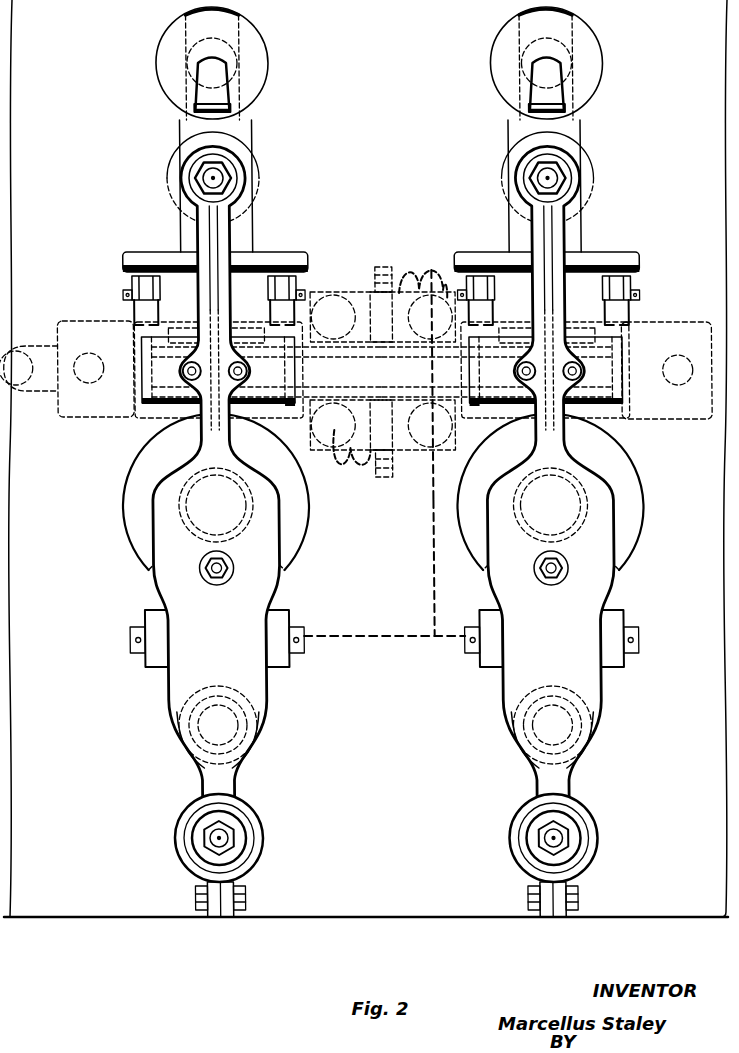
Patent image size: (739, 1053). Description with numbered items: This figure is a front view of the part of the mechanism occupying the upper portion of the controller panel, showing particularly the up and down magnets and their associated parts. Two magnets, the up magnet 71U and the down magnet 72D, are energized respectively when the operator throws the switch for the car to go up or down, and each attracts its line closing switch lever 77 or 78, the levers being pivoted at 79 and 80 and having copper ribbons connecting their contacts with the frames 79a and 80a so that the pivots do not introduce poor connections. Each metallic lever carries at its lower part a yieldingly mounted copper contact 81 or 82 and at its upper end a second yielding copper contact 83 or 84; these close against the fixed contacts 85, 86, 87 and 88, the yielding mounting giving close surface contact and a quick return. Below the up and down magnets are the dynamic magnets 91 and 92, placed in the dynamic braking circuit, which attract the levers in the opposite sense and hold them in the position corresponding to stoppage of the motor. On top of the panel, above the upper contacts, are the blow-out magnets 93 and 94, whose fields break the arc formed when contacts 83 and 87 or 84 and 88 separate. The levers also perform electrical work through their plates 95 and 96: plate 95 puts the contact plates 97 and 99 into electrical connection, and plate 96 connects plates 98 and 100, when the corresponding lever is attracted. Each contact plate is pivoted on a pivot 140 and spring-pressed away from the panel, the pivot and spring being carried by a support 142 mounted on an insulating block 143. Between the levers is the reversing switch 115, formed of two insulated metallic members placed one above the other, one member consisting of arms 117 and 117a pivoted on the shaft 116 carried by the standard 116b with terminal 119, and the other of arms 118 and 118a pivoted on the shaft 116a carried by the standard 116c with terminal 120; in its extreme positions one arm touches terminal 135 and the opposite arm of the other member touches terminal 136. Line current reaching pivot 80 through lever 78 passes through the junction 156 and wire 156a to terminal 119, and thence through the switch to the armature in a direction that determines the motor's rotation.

The up magnet 71U is at (145, 508).
The down magnet 72D is at (628, 506).
The line closing switch lever 77 is at (217, 235).
The line closing switch lever 78 is at (545, 240).
The pivot 79 is at (134, 641).
The frame 79a is at (155, 622).
The pivot 80 is at (627, 648).
The frame 80a is at (608, 622).
The contacting plate or button of copper 81 is at (172, 835).
The contacting plate or button of copper 82 is at (595, 835).
The yieldingly mounted copper contact 83 is at (170, 190).
The yieldingly mounted copper contact 84 is at (590, 191).
The fixed contact 85 is at (175, 858).
The fixed contact 86 is at (595, 858).
The fixed contact 87 is at (168, 158).
The fixed contact 88 is at (590, 160).
The dynamic magnet 91 is at (170, 742).
The dynamic magnet 92 is at (593, 750).
The blow-out magnet 93 is at (168, 66).
The blow-out magnet 94 is at (598, 71).
The plate 95 is at (150, 428).
The plate 96 is at (598, 420).
The contact plate 97 is at (140, 403).
The contact plate 98 is at (472, 405).
The contact plate 99 is at (289, 405).
The contact plate 100 is at (620, 407).
The reversing switch 115 is at (382, 371).
The shaft 116 is at (385, 268).
The shaft 116a is at (403, 474).
The standard 116b is at (383, 327).
The standard 116c is at (385, 441).
The arm of reversing switch 117 is at (426, 352).
The arm of reversing switch 117a is at (347, 352).
The arm of reversing switch 118 is at (424, 388).
The arm of reversing switch 118a is at (348, 386).
The terminal 119 is at (446, 306).
The terminal 120 is at (328, 434).
The terminal 135 is at (17, 364).
The terminal 136 is at (725, 364).
The pivot 140 is at (122, 297).
The support 142 is at (140, 288).
The insulating block 143 is at (124, 266).
The junction 156 is at (440, 642).
The wire 156a is at (430, 548).